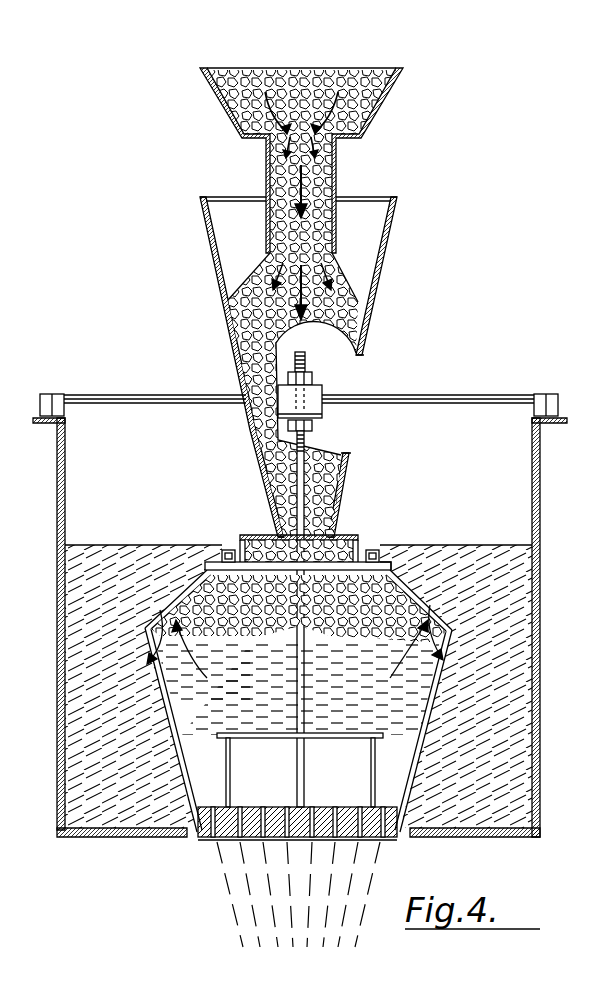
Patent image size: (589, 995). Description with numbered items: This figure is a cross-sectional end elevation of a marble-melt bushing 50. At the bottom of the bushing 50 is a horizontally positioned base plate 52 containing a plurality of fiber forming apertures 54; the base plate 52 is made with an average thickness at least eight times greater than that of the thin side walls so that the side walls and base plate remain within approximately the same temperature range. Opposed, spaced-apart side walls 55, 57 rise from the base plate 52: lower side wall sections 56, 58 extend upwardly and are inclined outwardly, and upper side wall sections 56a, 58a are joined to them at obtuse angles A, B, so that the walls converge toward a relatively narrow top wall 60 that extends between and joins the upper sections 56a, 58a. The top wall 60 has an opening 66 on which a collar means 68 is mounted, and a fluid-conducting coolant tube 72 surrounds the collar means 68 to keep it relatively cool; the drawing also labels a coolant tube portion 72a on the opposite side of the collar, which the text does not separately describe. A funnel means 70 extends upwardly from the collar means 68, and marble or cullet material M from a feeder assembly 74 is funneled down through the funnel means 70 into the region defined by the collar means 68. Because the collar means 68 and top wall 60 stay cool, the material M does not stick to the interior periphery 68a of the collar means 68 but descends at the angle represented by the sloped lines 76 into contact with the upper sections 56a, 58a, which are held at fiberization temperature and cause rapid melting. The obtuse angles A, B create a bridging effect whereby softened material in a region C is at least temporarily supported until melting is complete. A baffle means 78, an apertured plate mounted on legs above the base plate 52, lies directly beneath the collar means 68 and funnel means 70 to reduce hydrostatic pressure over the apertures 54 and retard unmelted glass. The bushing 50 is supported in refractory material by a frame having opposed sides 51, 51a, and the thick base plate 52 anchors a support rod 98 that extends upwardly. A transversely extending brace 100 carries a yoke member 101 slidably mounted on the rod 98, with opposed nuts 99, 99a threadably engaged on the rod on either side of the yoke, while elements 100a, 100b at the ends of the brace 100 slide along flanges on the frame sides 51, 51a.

The feeder assembly 74 is at (226, 122).
The funnel means 70 is at (210, 232).
The marble or cullet material M is at (360, 300).
The nut 99a is at (313, 373).
The yoke member 101 is at (324, 392).
The brace 100 is at (195, 396).
The brace end element 100a is at (548, 396).
The brace end element 100b is at (72, 373).
The nut 99 is at (312, 434).
The support rod 98 is at (312, 456).
The frame side 51a is at (65, 462).
The frame side 51 is at (535, 489).
The marble-melt bushing 50 is at (450, 522).
The side wall 55 is at (132, 645).
The side wall 57 is at (470, 678).
The upper side wall section 56a is at (177, 617).
The lower side wall section 56 is at (190, 742).
The upper side wall section 58a is at (425, 596).
The lower side wall section 58 is at (415, 730).
The region C is at (298, 655).
The obtuse angle A is at (180, 656).
The obtuse angle B is at (410, 654).
The opening 66 is at (262, 540).
The interior periphery of collar means 68a is at (232, 536).
The collar means 68 is at (343, 537).
The sloped lines 76 is at (392, 566).
The left spacer 72a is at (222, 548).
The coolant tube 72 is at (371, 548).
The top wall 60 is at (384, 560).
The baffle means 78 is at (330, 738).
The base plate 52 is at (375, 827).
The fiber forming apertures 54 is at (262, 808).